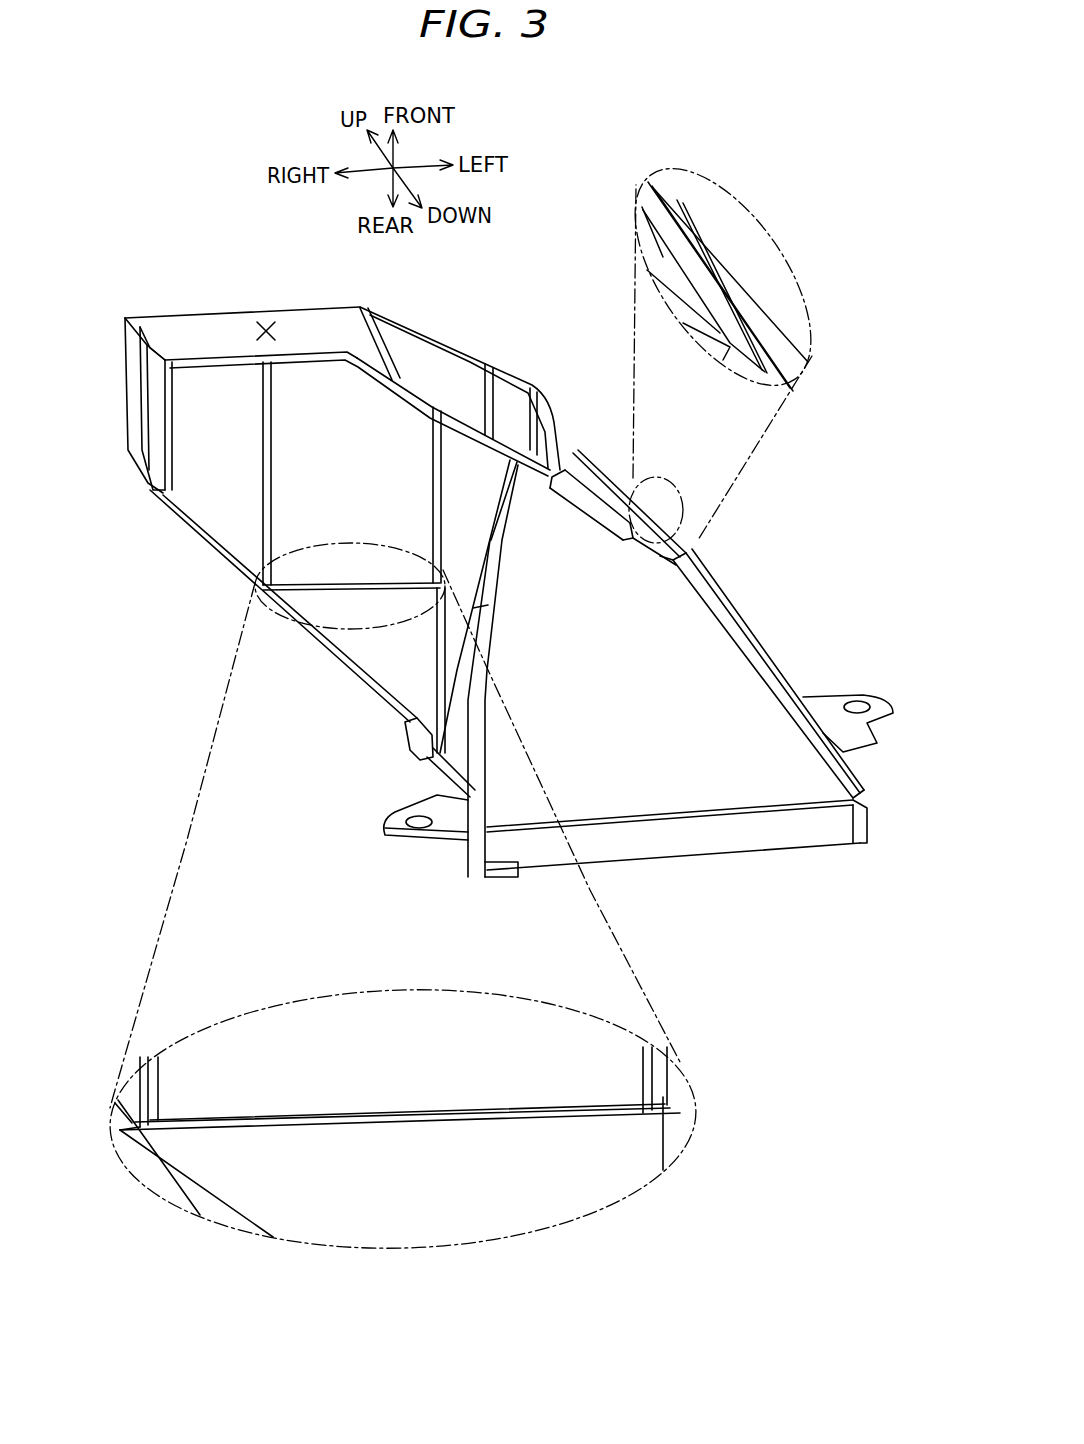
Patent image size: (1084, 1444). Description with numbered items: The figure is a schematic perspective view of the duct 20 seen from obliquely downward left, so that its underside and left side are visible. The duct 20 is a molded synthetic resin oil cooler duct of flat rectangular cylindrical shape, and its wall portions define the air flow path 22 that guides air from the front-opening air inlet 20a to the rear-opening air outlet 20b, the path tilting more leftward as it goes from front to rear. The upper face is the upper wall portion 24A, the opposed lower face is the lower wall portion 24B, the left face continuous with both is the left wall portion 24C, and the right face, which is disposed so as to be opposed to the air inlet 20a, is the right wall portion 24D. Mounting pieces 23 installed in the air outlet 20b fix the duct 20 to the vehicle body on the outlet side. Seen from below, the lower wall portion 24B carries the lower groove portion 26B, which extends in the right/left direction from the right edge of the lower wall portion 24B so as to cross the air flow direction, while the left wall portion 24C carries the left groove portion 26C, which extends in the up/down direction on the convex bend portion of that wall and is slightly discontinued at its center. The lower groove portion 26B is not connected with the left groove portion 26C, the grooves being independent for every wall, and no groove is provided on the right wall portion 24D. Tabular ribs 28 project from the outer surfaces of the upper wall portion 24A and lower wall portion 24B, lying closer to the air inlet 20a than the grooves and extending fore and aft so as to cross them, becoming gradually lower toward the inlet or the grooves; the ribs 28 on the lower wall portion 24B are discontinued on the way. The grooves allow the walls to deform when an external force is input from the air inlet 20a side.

The duct 20 is at (150, 282).
The air inlet 20a is at (222, 290).
The air outlet 20b is at (748, 855).
The air flow path 22 is at (266, 320).
The mounting piece 23 is at (878, 702).
The upper wall portion 24A is at (180, 290).
The lower wall portion 24B is at (198, 497).
The left wall portion 24C is at (733, 610).
The right wall portion 24D is at (325, 657).
The lower groove portion 26B is at (378, 683).
The left groove portion 26C is at (668, 535).
The ribs 28 is at (440, 430).